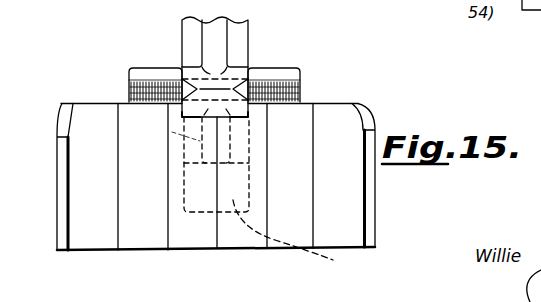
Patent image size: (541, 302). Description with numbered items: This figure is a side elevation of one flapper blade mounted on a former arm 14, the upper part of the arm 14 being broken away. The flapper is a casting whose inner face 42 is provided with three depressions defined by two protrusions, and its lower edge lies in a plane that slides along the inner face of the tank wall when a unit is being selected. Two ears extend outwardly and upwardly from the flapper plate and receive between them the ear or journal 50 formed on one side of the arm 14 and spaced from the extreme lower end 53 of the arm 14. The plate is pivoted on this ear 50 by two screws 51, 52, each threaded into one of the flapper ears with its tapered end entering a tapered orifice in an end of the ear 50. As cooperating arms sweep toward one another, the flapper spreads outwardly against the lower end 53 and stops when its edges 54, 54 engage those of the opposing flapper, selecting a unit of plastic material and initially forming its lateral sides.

The arm 14 is at (238, 33).
The inner face 42 is at (192, 225).
The ear or journal 50 is at (238, 72).
The screw 51 is at (130, 80).
The screw 52 is at (300, 81).
The extreme lower end 53 is at (294, 239).
The edge 54 is at (64, 186).